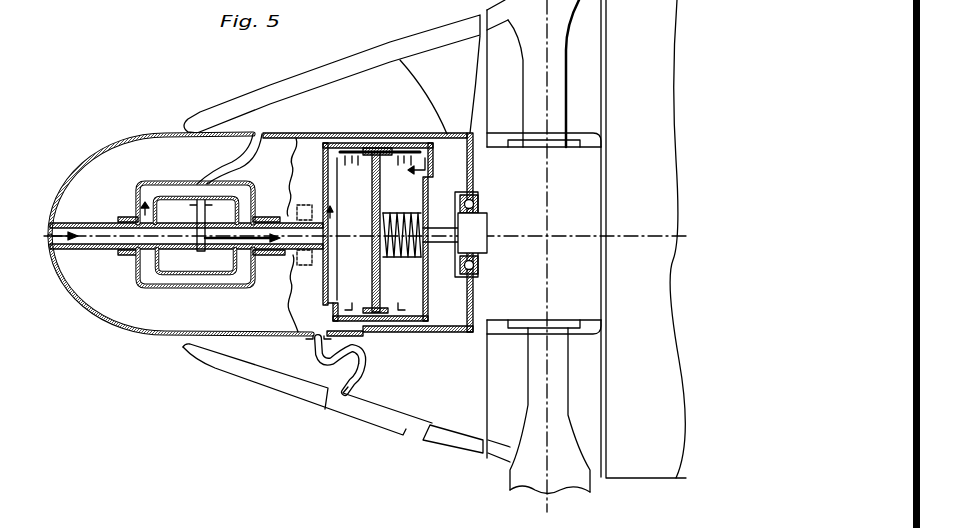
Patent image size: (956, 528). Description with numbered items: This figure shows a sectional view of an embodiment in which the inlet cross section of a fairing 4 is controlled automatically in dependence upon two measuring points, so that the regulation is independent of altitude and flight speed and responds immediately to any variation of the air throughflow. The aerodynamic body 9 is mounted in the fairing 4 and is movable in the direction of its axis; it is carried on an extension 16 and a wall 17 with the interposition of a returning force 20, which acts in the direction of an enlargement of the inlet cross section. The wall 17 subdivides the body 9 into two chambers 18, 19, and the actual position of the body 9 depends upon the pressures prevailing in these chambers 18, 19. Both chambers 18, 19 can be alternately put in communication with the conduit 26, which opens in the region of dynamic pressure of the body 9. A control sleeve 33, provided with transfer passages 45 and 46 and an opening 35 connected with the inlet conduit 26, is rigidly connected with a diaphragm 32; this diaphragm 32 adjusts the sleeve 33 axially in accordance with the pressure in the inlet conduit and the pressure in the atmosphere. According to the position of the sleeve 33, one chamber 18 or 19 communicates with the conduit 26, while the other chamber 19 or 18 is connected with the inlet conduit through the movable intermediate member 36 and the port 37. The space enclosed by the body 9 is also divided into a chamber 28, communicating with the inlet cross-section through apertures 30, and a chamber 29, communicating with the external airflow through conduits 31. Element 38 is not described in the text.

The fairing 4 is at (287, 390).
The body 9 is at (173, 330).
The extension 16 is at (443, 246).
The wall 17 is at (378, 263).
The chamber 18 is at (344, 291).
The chamber 19 is at (394, 302).
The returning force 20 is at (417, 212).
The conduit 26 is at (102, 249).
The chamber 28 is at (122, 300).
The chamber 29 is at (307, 155).
The aperture 30 is at (187, 127).
The conduit 31 is at (360, 365).
The diaphragm 32 is at (294, 292).
The sleeve 33 is at (262, 256).
The opening 35 is at (198, 224).
The intermediate member 36 is at (217, 162).
The port 37 is at (263, 134).
The valve 38 is at (200, 213).
The transfer passage 45 is at (158, 193).
The transfer passage 46 is at (220, 278).